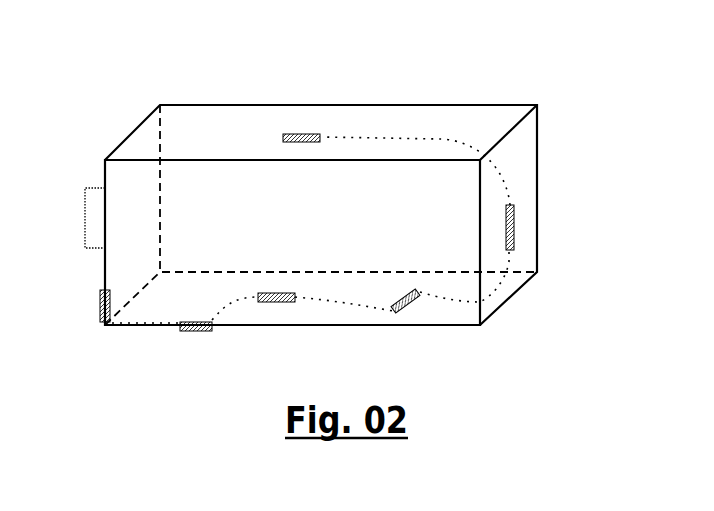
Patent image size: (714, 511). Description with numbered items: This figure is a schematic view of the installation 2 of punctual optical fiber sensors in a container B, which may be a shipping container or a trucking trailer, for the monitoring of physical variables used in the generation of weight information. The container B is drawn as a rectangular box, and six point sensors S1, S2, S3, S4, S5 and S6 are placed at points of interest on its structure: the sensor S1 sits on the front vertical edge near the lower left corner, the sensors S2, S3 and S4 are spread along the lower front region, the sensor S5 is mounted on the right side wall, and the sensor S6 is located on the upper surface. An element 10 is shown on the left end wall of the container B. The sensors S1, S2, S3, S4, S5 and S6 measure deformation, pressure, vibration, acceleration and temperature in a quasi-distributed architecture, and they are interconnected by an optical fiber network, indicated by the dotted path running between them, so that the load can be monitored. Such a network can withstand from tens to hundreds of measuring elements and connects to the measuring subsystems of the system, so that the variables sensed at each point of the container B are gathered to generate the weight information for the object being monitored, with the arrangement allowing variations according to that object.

The sensor arrangement 2 is at (140, 347).
The container B is at (140, 145).
The connector 10 is at (85, 238).
The punctual sensor based on optical fiber S1 is at (100, 310).
The punctual sensor based on optical fiber S2 is at (192, 332).
The punctual sensor based on optical fiber S3 is at (277, 302).
The punctual sensor based on optical fiber S4 is at (410, 305).
The punctual sensor based on optical fiber S5 is at (514, 232).
The punctual sensor based on optical fiber S6 is at (295, 134).